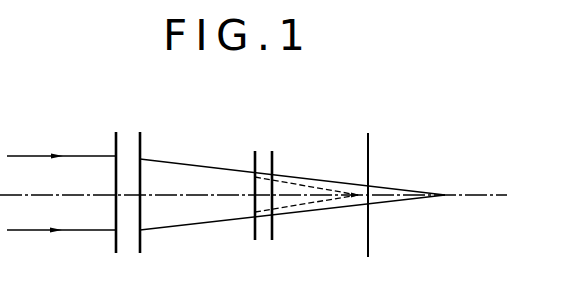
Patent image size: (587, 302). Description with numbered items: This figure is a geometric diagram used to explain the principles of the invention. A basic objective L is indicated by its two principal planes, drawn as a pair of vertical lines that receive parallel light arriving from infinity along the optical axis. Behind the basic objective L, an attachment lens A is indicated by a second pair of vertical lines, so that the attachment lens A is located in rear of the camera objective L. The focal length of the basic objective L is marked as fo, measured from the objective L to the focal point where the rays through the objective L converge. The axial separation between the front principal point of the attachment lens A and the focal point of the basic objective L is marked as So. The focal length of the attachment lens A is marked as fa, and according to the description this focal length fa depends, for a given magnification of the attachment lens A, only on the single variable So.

The basic objective L is at (130, 149).
The attachment lens A is at (264, 160).
The focal length of the basic objective fo is at (368, 139).
The axial separation So is at (368, 250).
The focal length of the attachment lens fa is at (265, 269).